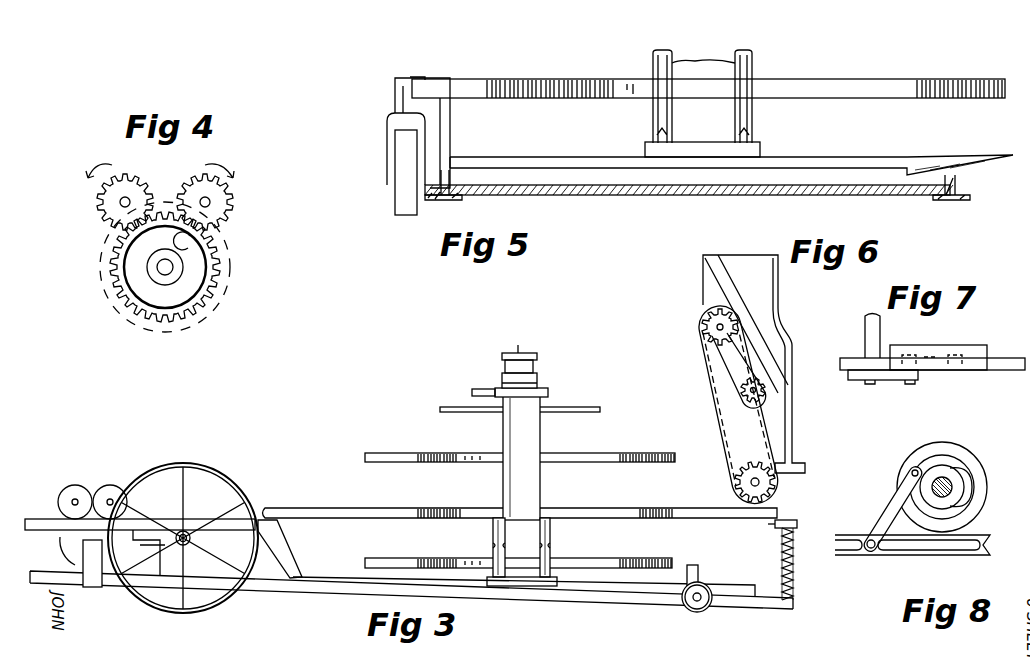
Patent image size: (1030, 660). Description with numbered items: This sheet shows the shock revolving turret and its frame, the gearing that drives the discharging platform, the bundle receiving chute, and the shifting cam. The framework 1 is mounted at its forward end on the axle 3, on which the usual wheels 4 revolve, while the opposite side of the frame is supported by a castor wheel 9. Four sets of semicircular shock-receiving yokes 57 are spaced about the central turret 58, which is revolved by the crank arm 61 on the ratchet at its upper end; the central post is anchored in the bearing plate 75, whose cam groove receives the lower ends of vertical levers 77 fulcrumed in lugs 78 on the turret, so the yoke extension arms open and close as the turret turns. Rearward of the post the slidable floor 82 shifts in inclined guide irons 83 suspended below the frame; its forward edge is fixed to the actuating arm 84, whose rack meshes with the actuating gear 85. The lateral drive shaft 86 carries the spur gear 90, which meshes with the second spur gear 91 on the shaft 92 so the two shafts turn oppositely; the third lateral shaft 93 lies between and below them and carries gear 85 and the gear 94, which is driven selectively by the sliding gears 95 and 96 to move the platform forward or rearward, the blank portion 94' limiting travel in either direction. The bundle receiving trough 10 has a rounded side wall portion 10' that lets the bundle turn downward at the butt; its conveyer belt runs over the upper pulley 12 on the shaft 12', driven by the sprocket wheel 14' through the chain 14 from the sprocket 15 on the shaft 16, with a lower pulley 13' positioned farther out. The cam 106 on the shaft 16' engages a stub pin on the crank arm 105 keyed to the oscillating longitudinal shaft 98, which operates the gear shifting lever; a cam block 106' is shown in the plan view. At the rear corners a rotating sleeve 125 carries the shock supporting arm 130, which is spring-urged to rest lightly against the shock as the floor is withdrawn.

In FIG. 5, the framework 1 is at (830, 158).
In FIG. 3, the framework 1 is at (296, 569).
In FIG. 3, the axle 3 is at (191, 528).
In FIG. 3, the wheels 4 is at (240, 482).
In FIG. 5, the castor wheel 9 is at (393, 148).
In FIG. 3, the castor wheel 9 is at (705, 612).
In FIG. 6, the bundle receiving trough 10 is at (757, 364).
In FIG. 6, the rounded side wall portion 10' is at (805, 319).
In FIG. 6, the upper pulley 12 is at (705, 313).
In FIG. 6, the pulley shaft 12' is at (692, 335).
In FIG. 6, the idler sprocket 13' is at (769, 370).
In FIG. 6, the chain 14 is at (730, 405).
In FIG. 6, the sprocket wheel 14' is at (724, 322).
In FIG. 6, the sprocket 15 is at (745, 484).
In FIG. 6, the shaft 16 is at (772, 482).
In FIG. 8, the shaft 16' is at (969, 487).
In FIG. 5, the shock-receiving yokes 57 is at (846, 86).
In FIG. 3, the shock-receiving yokes 57 is at (445, 508).
In FIG. 5, the turret 58 is at (710, 63).
In FIG. 3, the turret 58 is at (532, 446).
In FIG. 3, the crank arm 61 is at (470, 394).
In FIG. 5, the bearing plate 75 is at (762, 152).
In FIG. 3, the bearing plate 75 is at (547, 588).
In FIG. 5, the vertical levers 77 is at (653, 62).
In FIG. 3, the vertical levers 77 is at (493, 531).
In FIG. 3, the lugs 78 is at (493, 545).
In FIG. 5, the slidable floor 82 is at (633, 198).
In FIG. 5, the guide irons 83 is at (452, 183).
In FIG. 3, the guide irons 83 is at (793, 602).
In FIG. 3, the actuating arm 84 is at (264, 592).
In FIG. 4, the actuating gear 85 is at (100, 268).
In FIG. 3, the actuating gear 85 is at (70, 545).
In FIG. 4, the lateral drive shaft 86 is at (118, 205).
In FIG. 3, the spur gear 90 is at (76, 490).
In FIG. 3, the second spur gear 91 is at (113, 490).
In FIG. 4, the shaft 92 is at (222, 208).
In FIG. 4, the third lateral shaft 93 is at (183, 267).
In FIG. 4, the gear 94 is at (193, 267).
In FIG. 4, the blank portion 94' is at (222, 232).
In FIG. 4, the sliding gear 95 is at (131, 192).
In FIG. 4, the sliding gear 96 is at (214, 203).
In FIG. 7, the oscillating longitudinal shaft 98 is at (865, 331).
In FIG. 8, the oscillating longitudinal shaft 98 is at (875, 553).
In FIG. 7, the crank arm 105 is at (905, 381).
In FIG. 8, the crank arm 105 is at (891, 504).
In FIG. 8, the cam 106 is at (958, 480).
In FIG. 7, the cam block 106' is at (938, 347).
In FIG. 8, the rotating sleeve 125 is at (912, 545).
In FIG. 3, the rotating sleeve 125 is at (589, 405).
In FIG. 3, the shock supporting arm 130 is at (795, 525).